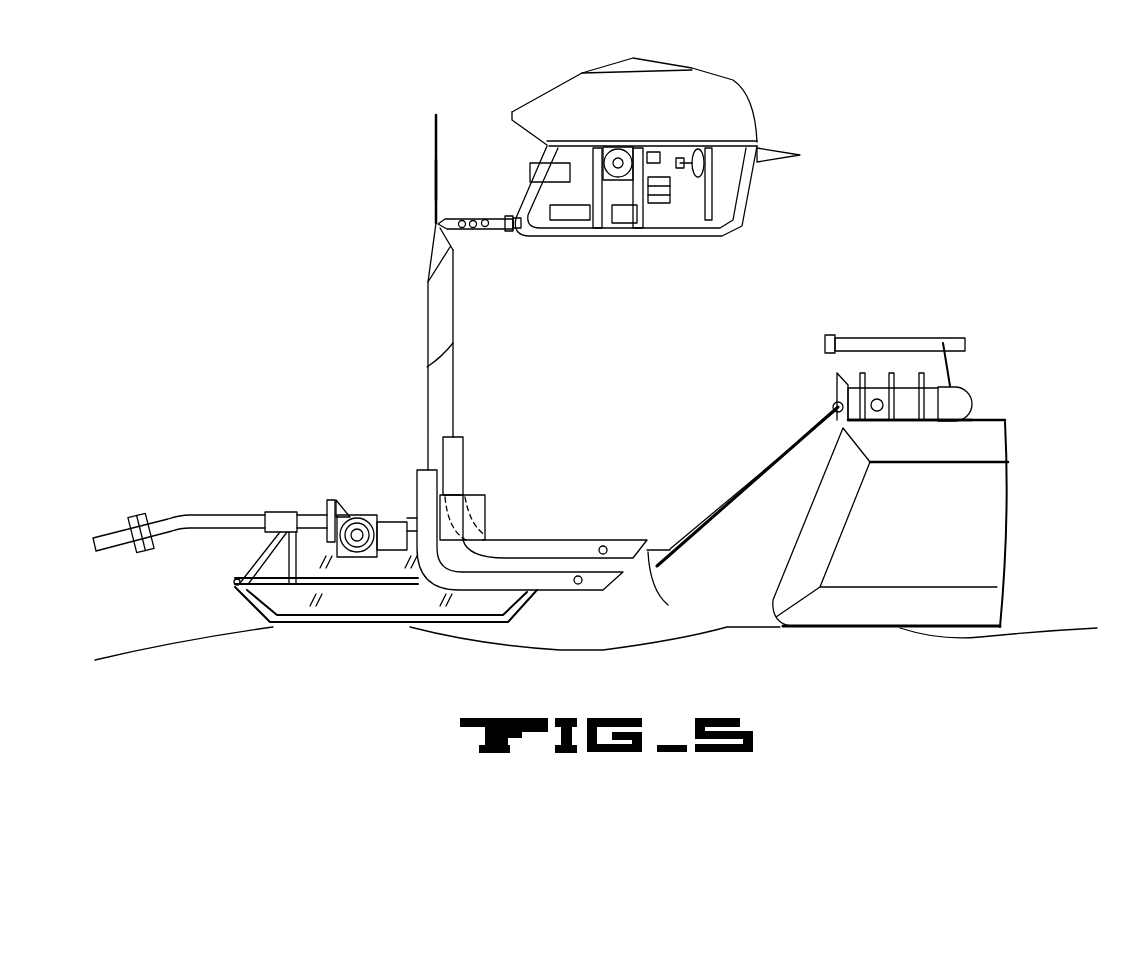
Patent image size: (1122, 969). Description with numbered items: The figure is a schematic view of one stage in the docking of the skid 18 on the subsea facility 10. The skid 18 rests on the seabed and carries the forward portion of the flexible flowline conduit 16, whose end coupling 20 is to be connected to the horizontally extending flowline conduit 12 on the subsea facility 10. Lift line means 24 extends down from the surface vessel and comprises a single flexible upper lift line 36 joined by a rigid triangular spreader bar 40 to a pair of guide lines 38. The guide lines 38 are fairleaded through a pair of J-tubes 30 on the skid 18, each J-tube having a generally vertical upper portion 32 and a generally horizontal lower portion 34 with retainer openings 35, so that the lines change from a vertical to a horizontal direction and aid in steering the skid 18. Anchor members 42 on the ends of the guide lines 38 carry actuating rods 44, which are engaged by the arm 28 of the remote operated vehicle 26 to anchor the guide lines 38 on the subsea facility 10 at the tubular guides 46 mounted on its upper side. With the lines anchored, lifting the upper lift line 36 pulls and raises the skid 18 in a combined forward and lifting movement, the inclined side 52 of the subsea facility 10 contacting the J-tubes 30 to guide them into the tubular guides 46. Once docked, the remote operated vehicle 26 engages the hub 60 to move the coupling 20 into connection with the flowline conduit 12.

The subsea facility 10 is at (1027, 426).
The flowline conduit 12 is at (825, 343).
The flowline conduit 16 is at (205, 515).
The skid 18 is at (326, 494).
The end coupling 20 is at (487, 503).
The lift line means 24 is at (430, 126).
The remote operated vehicle 26 is at (744, 88).
The arm 28 is at (477, 236).
The J-tubes 30 is at (550, 528).
The upper portion 32 is at (467, 443).
The lower portion 34 is at (591, 539).
The retainer openings 35 is at (578, 586).
The upper lift line 36 is at (436, 176).
The guide lines 38 is at (459, 348).
The spreader bar 40 is at (428, 253).
The anchor members 42 is at (970, 396).
The actuating rods 44 is at (946, 362).
The tubular guides 46 is at (906, 438).
The inclined side 52 is at (793, 546).
The hub 60 is at (357, 519).